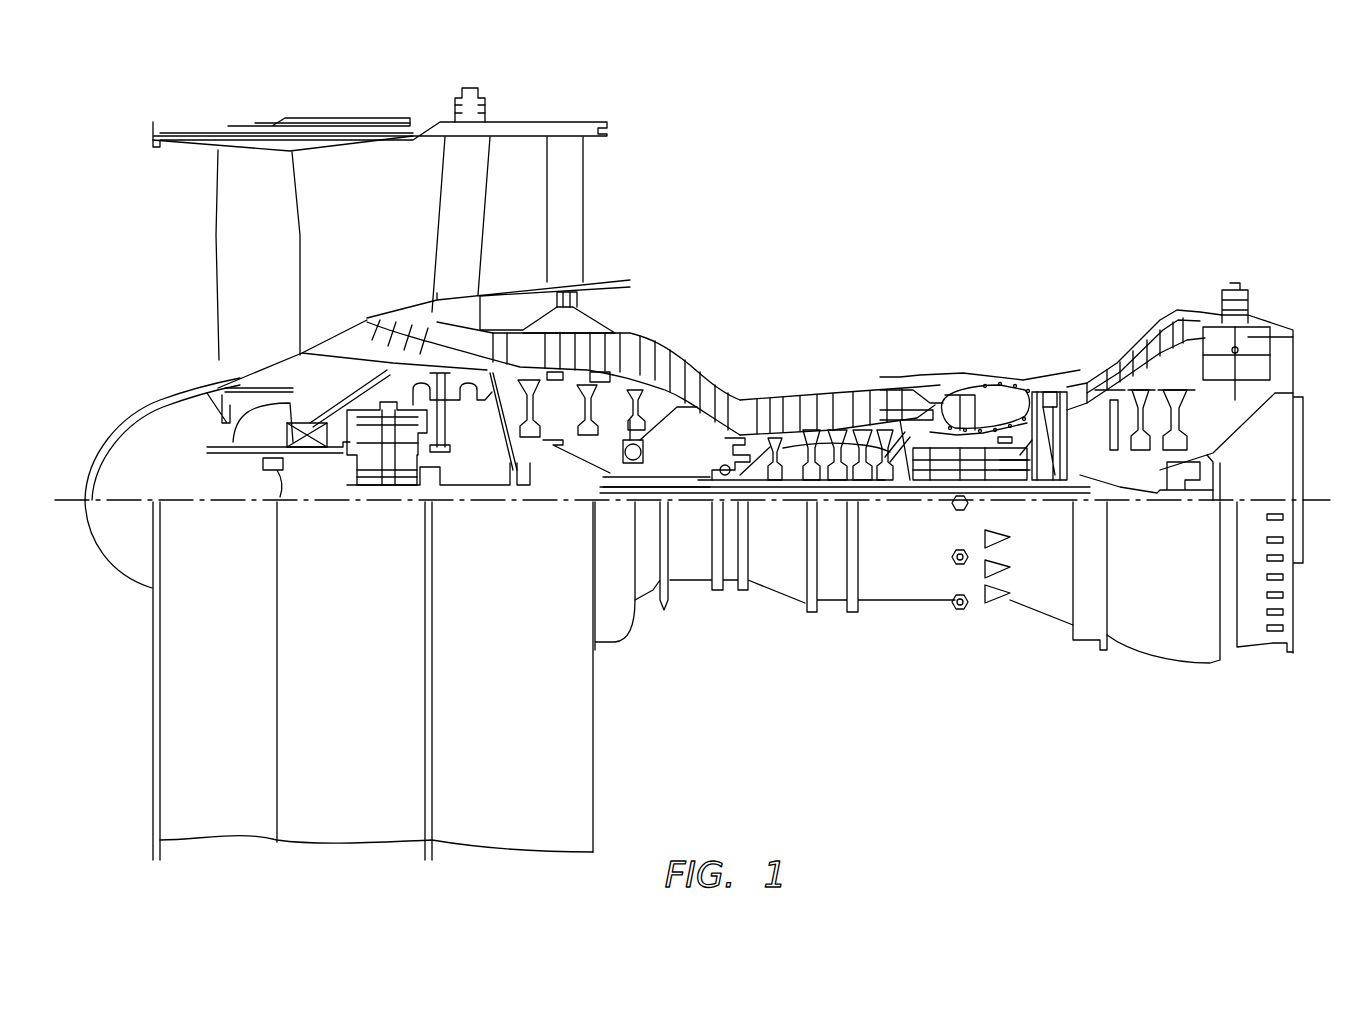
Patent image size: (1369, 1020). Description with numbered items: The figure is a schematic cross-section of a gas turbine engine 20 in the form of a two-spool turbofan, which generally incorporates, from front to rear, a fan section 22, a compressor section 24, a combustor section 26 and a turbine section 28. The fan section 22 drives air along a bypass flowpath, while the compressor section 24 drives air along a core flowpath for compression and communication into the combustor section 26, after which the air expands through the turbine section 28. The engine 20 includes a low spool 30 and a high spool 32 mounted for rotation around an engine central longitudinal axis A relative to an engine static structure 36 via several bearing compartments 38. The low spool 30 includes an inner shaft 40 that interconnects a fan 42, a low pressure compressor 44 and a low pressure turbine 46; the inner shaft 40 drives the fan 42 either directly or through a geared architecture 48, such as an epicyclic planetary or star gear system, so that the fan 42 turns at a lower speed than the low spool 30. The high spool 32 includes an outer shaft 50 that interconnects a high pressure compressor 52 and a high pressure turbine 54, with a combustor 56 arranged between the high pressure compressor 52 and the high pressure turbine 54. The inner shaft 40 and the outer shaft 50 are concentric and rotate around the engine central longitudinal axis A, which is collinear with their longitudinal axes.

The gas turbine engine 20 is at (1036, 177).
The fan section 22 is at (150, 95).
The compressor section 24 is at (447, 253).
The combustor section 26 is at (1030, 253).
The turbine section 28 is at (1235, 253).
The low spool 30 is at (697, 447).
The high spool 32 is at (900, 413).
The engine static structure 36 is at (830, 604).
The bearing compartments 38 is at (460, 572).
The inner shaft 40 is at (1014, 492).
The fan 42 is at (243, 266).
The low pressure compressor 44 is at (608, 356).
The low pressure turbine 46 is at (1153, 337).
The geared architecture 48 is at (383, 455).
The outer shaft 50 is at (1022, 462).
The high pressure compressor 52 is at (757, 408).
The high pressure turbine 54 is at (1050, 392).
The combustor 56 is at (988, 409).
The engine central longitudinal axis A is at (1324, 492).